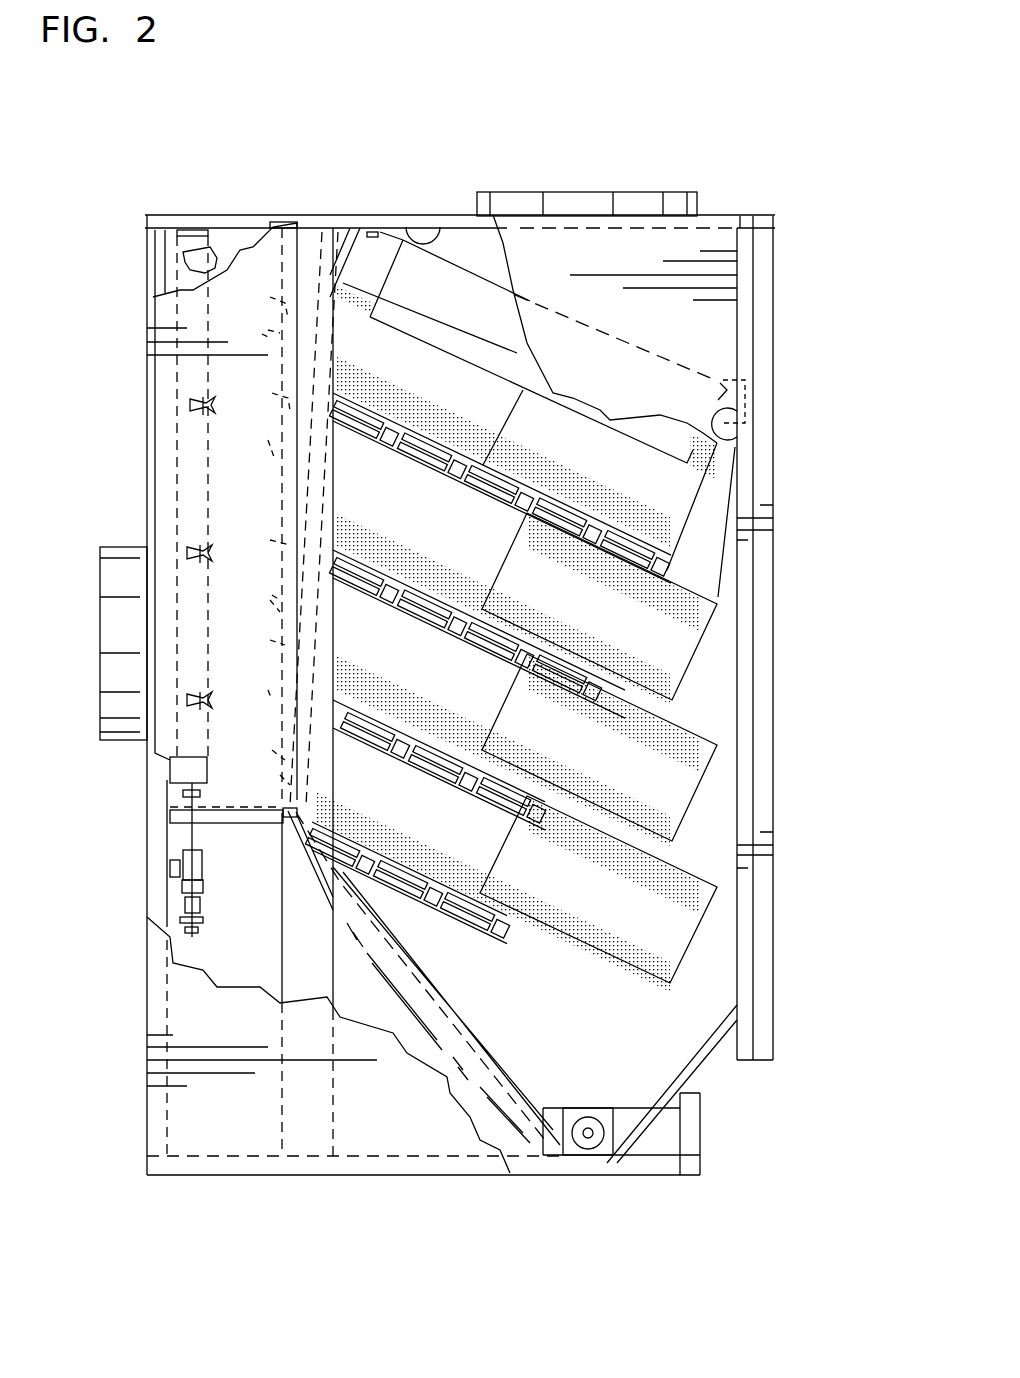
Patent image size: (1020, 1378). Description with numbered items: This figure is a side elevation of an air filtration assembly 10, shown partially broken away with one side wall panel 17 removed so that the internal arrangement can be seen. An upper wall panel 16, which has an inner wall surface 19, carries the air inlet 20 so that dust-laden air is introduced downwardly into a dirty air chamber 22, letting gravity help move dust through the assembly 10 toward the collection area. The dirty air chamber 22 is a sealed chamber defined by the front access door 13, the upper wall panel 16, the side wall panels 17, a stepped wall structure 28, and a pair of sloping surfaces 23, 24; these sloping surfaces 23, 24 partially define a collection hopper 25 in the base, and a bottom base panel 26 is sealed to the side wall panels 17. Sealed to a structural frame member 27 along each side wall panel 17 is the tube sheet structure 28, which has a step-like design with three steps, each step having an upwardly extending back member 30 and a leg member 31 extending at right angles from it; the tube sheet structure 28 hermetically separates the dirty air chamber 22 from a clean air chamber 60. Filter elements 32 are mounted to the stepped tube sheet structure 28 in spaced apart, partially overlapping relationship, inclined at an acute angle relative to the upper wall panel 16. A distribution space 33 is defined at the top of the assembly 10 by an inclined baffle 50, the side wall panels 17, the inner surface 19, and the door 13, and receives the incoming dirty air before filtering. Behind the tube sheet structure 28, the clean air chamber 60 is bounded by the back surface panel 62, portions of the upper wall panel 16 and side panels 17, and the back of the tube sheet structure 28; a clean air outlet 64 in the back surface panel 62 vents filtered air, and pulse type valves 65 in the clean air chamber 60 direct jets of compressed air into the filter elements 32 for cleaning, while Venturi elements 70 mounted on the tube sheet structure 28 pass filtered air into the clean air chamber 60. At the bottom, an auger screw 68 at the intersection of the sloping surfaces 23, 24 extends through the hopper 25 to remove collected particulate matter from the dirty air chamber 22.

The assembly 10 is at (551, 157).
The door 13 is at (776, 250).
The upper wall panel 16 is at (350, 213).
The side wall panel 17 is at (282, 240).
The inner wall surface 19 is at (413, 245).
The inlet 20 is at (588, 192).
The dirty air chamber 22 is at (552, 616).
The sloping surface 23 is at (684, 1075).
The sloping surface 24 is at (520, 1080).
The hopper 25 is at (697, 1005).
The bottom base panel 26 is at (283, 1160).
The structural frame member 27 is at (302, 938).
The tube sheet structure 28 is at (286, 305).
The back member 30 is at (286, 643).
The leg member 31 is at (305, 400).
The filter elements 32 is at (360, 362).
The distribution space 33 is at (700, 246).
The inclined baffle 50 is at (680, 390).
The clean air chamber 60 is at (210, 386).
The back surface panel 62 is at (165, 460).
The clean air outlet 64 is at (126, 715).
The pulse type valves 65 is at (188, 262).
The auger screw 68 is at (580, 1148).
The Venturi elements 70 is at (262, 334).